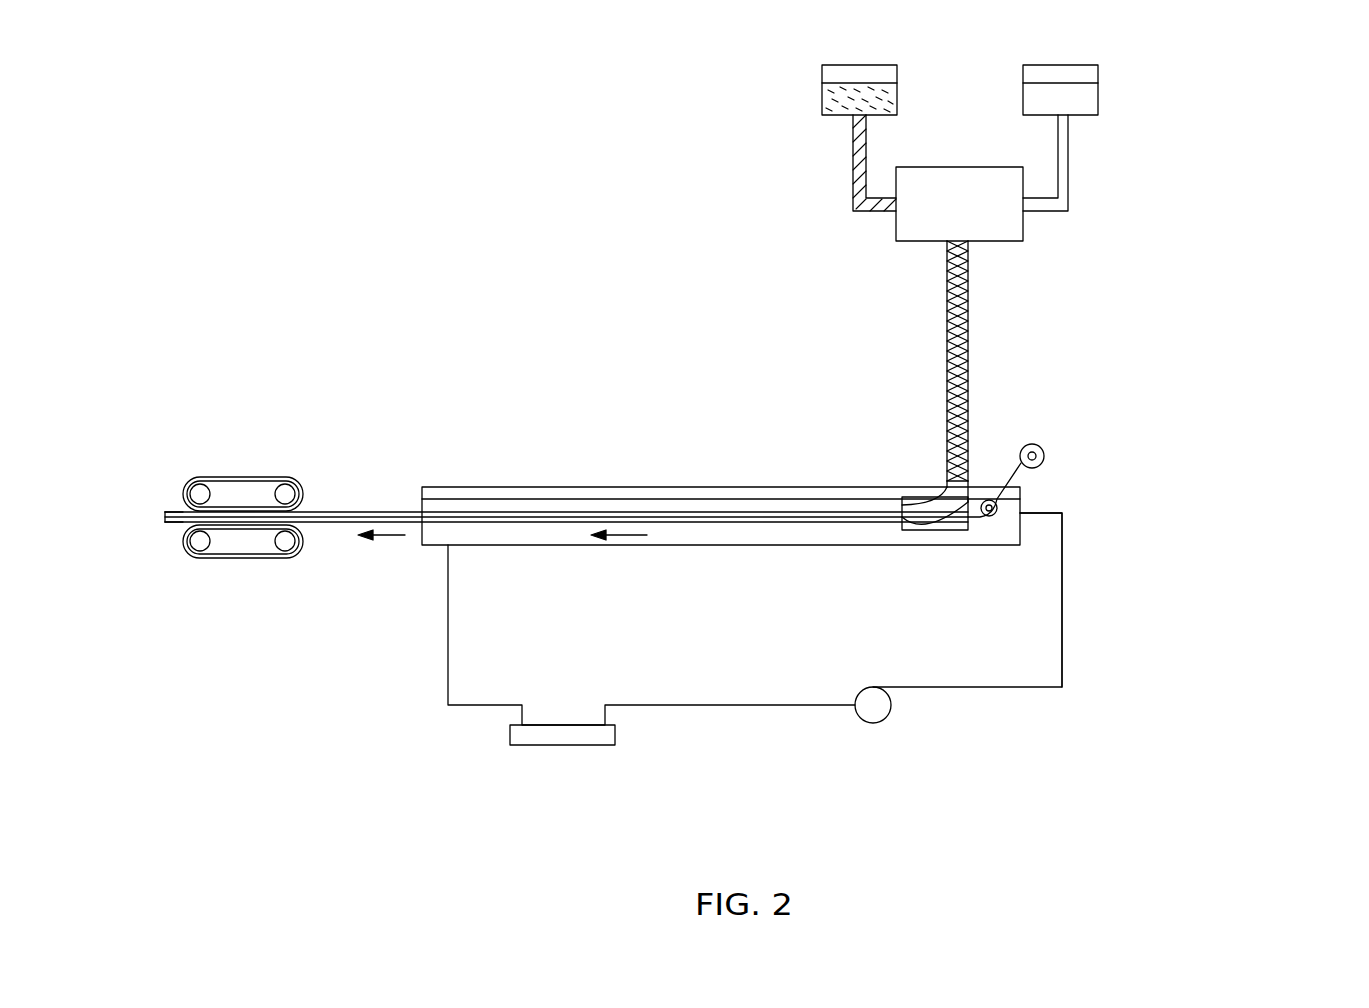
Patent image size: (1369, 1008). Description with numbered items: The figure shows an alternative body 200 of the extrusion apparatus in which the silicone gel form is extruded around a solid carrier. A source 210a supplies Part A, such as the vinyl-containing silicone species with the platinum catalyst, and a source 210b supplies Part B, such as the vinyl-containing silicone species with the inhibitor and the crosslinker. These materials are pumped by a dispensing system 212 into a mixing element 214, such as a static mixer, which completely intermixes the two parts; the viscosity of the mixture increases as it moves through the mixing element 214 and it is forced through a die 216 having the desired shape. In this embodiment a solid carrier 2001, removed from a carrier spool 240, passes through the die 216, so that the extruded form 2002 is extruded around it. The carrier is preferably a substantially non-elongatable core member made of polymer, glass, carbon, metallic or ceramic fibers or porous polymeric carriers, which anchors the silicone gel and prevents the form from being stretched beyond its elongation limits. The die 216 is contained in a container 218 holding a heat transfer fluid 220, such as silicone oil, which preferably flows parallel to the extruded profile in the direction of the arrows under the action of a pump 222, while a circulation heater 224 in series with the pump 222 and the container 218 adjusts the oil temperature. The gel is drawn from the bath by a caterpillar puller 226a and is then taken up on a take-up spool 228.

The alternative body 200 is at (1283, 328).
The source for part A 210a is at (897, 73).
The source for part B 210b is at (1097, 73).
The dispensing system 212 is at (1023, 231).
The mixing element 214 is at (970, 347).
The die 216 is at (950, 530).
The carrier spool 240 is at (1045, 455).
The solid carrier 2001 is at (1017, 478).
The container 218 is at (1022, 546).
The heat transfer fluid 220 is at (807, 538).
The pump 222 is at (880, 723).
The circulation heater 224 is at (613, 733).
The extruded form 2002 is at (372, 517).
The spool 228 is at (165, 519).
The caterpillar puller 226a is at (293, 553).